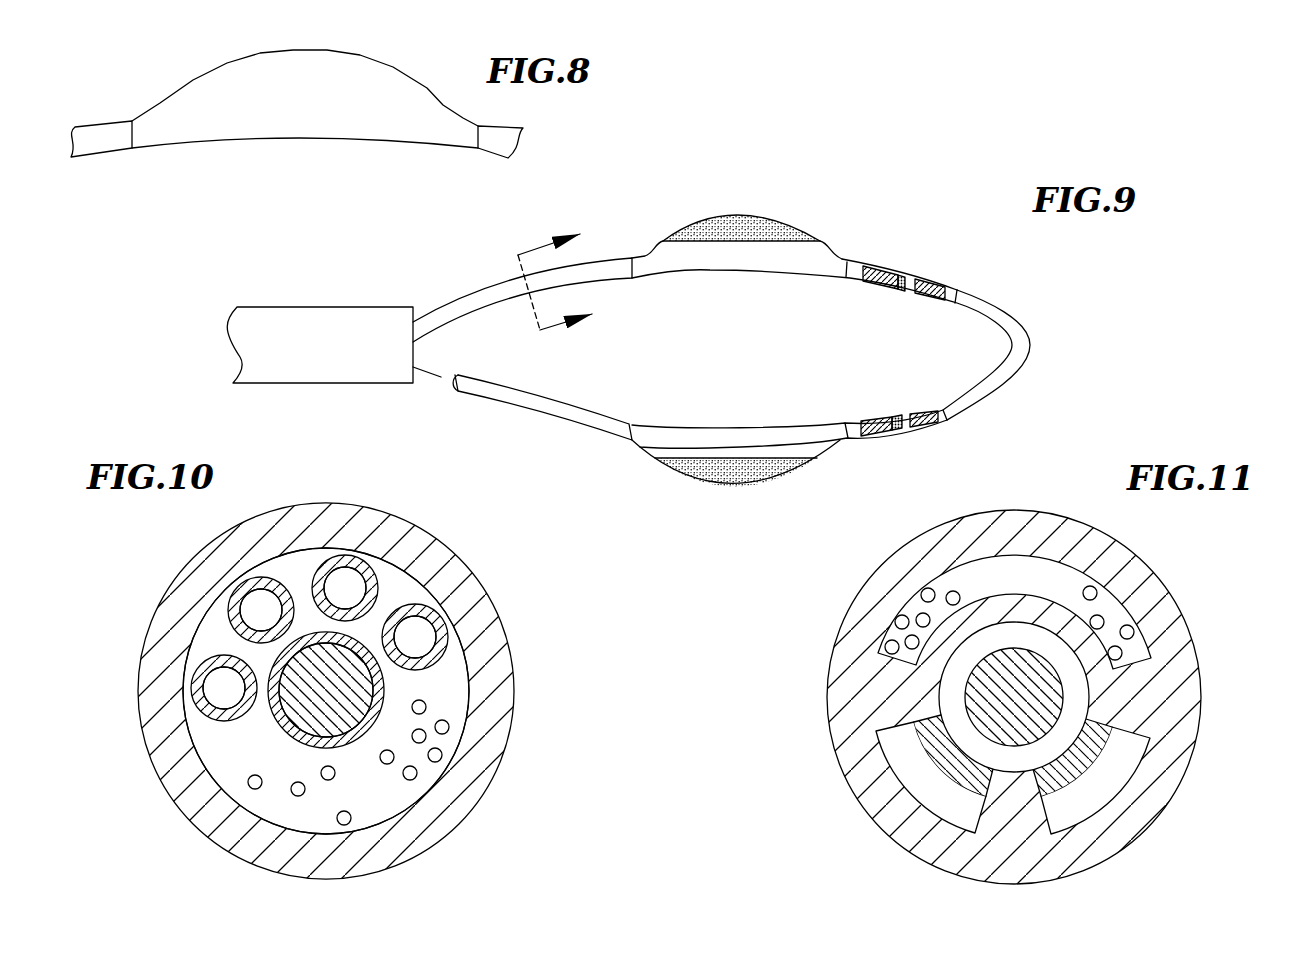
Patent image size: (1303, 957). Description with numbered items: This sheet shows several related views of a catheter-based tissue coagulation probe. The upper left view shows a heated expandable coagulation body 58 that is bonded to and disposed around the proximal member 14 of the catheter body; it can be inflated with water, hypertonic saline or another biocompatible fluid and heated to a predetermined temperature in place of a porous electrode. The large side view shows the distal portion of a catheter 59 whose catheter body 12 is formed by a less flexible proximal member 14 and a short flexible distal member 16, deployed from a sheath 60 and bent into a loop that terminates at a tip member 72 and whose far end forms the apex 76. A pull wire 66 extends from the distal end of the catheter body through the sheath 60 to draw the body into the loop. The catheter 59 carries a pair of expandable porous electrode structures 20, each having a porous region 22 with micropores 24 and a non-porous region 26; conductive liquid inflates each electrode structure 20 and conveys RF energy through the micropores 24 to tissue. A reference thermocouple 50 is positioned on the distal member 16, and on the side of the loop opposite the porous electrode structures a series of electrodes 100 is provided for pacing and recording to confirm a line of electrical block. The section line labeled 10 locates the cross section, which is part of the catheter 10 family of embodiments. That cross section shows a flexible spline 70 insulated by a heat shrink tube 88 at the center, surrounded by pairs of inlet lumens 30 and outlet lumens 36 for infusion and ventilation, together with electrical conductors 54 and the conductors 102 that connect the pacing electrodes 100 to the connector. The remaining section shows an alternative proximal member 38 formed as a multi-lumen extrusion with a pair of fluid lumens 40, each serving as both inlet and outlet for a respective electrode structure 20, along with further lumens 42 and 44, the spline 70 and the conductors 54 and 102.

In FIG. 9, the catheter 10 is at (579, 274).
In FIG. 9, the catheter body 12 is at (475, 265).
In FIG. 8, the proximal member 14 is at (102, 149).
In FIG. 9, the proximal member 14 is at (480, 298).
In FIG. 10, the proximal member 14 is at (467, 611).
In FIG. 9, the distal member 16 is at (553, 406).
In FIG. 9, the expandable porous electrode structure 20 is at (833, 248).
In FIG. 9, the porous region 22 is at (758, 213).
In FIG. 9, the micropores 24 is at (703, 235).
In FIG. 9, the non-porous region 26 is at (788, 255).
In FIG. 10, the inlet lumens 30 is at (219, 661).
In FIG. 10, the outlet lumens 36 is at (437, 618).
In FIG. 11, the proximal member 38 is at (1173, 665).
In FIG. 11, the fluid lumens 40 is at (933, 793).
In FIG. 11, the lumen 42 is at (950, 688).
In FIG. 11, the lumen 44 is at (1042, 566).
In FIG. 9, the reference thermocouple 50 is at (903, 280).
In FIG. 10, the electrical conductors 54 is at (434, 773).
In FIG. 11, the electrical conductors 54 is at (912, 600).
In FIG. 8, the heated expandable coagulation body 58 is at (330, 110).
In FIG. 9, the catheter 59 is at (557, 223).
In FIG. 9, the sheath 60 is at (340, 307).
In FIG. 9, the pull wire 66 is at (430, 373).
In FIG. 10, the flexible spline 70 is at (366, 682).
In FIG. 11, the flexible spline 70 is at (1043, 653).
In FIG. 9, the tip member 72 is at (450, 385).
In FIG. 9, the apex 76 is at (1033, 352).
In FIG. 10, the heat shrink tube 88 is at (280, 732).
In FIG. 9, the electrodes 100 is at (940, 288).
In FIG. 10, the conductors 102 is at (276, 804).
In FIG. 11, the conductors 102 is at (1110, 607).